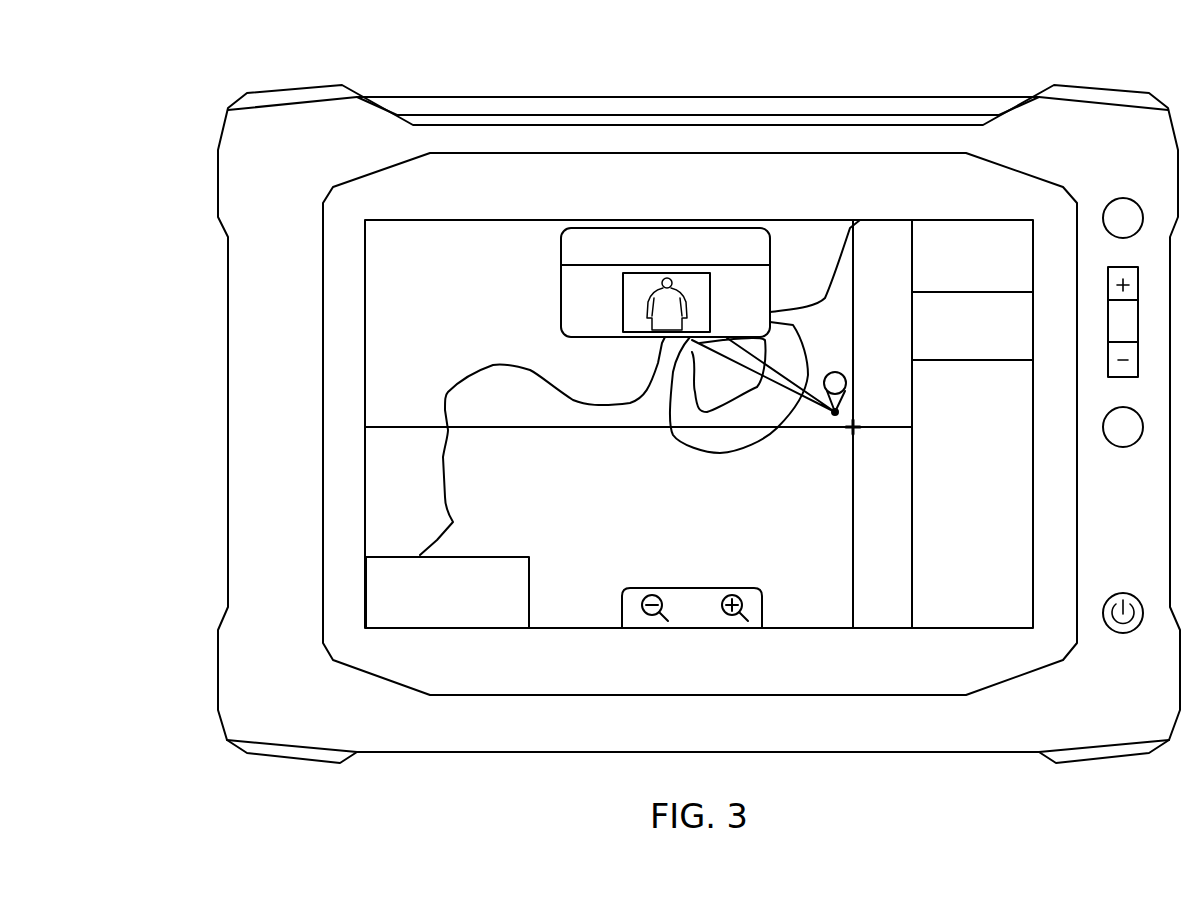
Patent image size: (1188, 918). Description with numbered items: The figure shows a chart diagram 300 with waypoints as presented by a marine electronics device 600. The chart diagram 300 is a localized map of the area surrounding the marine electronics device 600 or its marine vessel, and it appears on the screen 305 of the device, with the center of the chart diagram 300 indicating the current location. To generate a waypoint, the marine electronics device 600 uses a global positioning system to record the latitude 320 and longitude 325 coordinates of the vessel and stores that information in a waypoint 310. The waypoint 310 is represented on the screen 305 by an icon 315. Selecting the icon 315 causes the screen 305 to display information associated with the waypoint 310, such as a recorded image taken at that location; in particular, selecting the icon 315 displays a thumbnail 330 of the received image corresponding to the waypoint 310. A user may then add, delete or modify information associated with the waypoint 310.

The marine electronics device 600 is at (520, 70).
The chart diagram 300 is at (383, 328).
The screen 305 is at (537, 655).
The waypoint 310 is at (840, 412).
The icon 315 is at (844, 375).
The latitude 320 is at (366, 566).
The longitude 325 is at (366, 593).
The thumbnail 330 is at (623, 304).